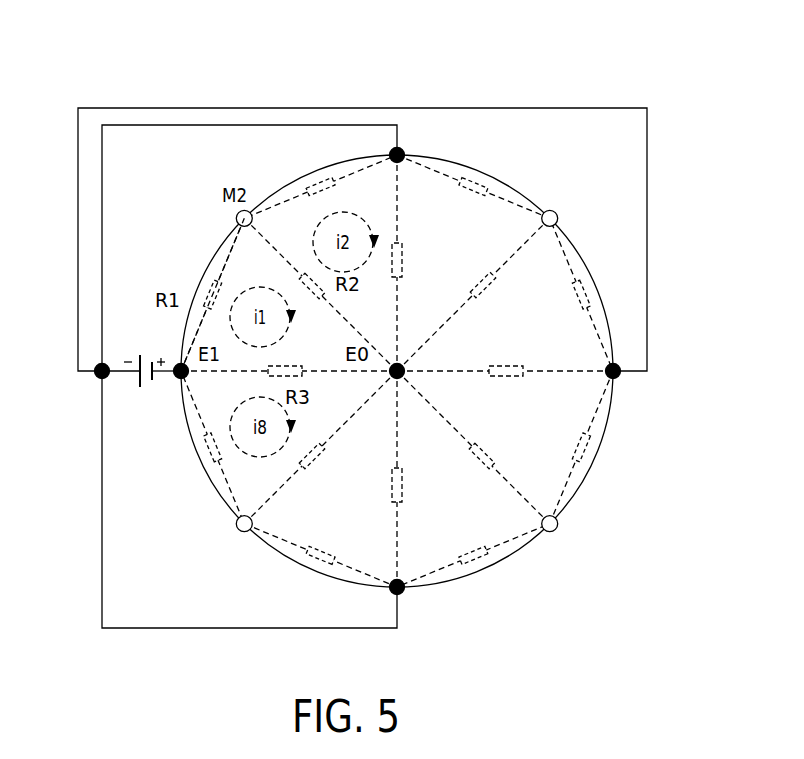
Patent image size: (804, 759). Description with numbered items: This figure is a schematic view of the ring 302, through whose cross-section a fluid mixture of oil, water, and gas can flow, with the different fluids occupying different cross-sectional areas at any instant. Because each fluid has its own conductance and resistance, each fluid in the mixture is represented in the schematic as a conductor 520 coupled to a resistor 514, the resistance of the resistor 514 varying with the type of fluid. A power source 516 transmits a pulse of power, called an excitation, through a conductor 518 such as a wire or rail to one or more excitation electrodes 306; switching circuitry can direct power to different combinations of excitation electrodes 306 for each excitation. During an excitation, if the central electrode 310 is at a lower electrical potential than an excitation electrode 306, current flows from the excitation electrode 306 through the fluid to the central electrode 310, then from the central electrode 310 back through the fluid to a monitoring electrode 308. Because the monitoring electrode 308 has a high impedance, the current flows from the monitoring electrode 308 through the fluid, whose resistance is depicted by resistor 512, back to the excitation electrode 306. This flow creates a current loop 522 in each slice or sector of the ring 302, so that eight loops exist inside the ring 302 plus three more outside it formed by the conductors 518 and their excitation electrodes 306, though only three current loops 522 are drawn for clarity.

The ring 302 is at (547, 72).
The excitation electrode 306 is at (178, 379).
The monitoring electrode 308 is at (556, 529).
The central electrode 310 is at (403, 375).
The resistor 512 is at (611, 441).
The resistor 514 is at (487, 289).
The power source 516 is at (139, 382).
The conductor 518 is at (102, 616).
The conductor 520 is at (474, 258).
The current loop 522 is at (213, 266).